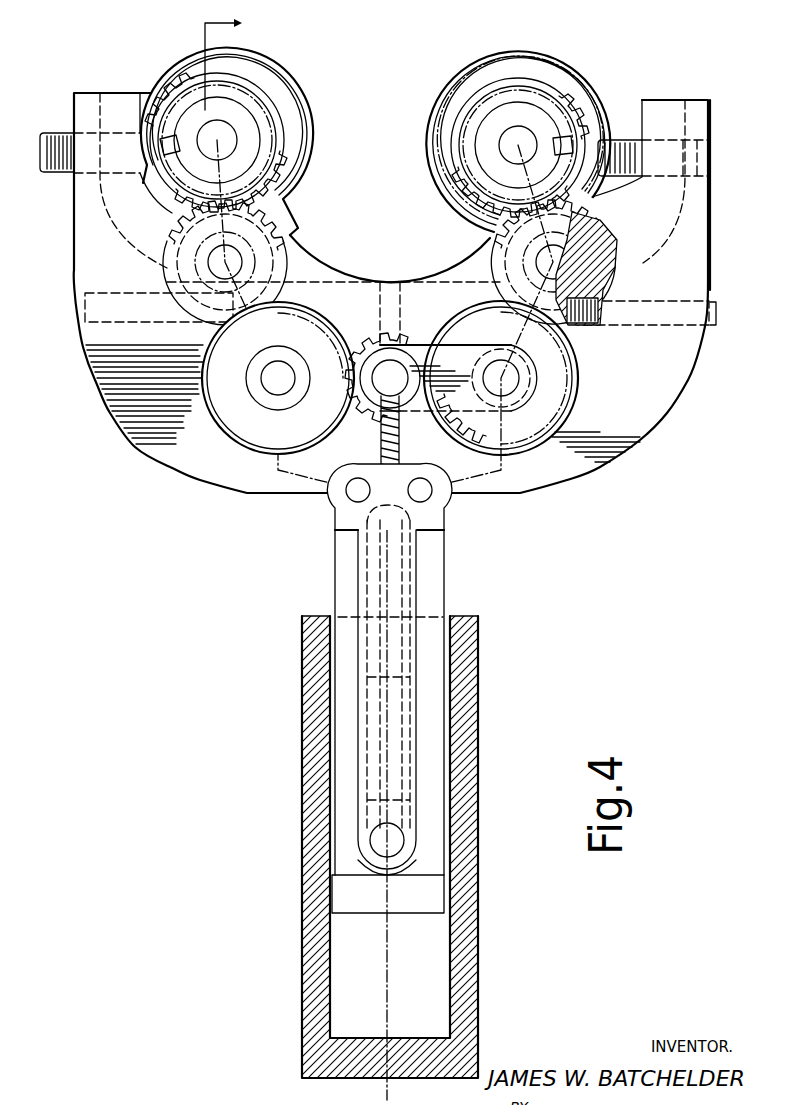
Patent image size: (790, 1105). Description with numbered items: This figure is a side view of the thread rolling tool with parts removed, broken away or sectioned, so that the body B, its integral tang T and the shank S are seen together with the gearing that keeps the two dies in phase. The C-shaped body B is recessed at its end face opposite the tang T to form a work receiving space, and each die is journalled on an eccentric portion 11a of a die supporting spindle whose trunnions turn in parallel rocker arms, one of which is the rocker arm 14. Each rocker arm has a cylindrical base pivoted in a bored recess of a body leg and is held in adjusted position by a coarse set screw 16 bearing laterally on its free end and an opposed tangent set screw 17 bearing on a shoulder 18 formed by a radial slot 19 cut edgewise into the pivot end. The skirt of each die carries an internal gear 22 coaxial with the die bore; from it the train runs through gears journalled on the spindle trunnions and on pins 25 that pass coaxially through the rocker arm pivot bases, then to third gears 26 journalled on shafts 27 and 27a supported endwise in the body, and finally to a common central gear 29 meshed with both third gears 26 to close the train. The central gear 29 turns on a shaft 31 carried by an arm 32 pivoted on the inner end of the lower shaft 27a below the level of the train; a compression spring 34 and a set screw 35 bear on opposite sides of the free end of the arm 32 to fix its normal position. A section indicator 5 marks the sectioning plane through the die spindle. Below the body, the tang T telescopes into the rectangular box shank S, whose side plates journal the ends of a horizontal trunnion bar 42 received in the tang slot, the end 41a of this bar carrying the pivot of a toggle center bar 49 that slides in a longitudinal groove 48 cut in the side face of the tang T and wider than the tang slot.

The body B is at (72, 258).
The shank S is at (298, 767).
The tang T is at (372, 716).
The section line 5- 5 is at (231, 55).
The eccentric portion 11a is at (262, 101).
The rocker arm 14 is at (349, 120).
The coarse set screw 16 is at (45, 158).
The tangent set screw 17 is at (83, 312).
The shoulder 18 is at (590, 304).
The radial slot 19 is at (577, 282).
The internal gear 22 is at (172, 93).
The pin or shaft 25 is at (293, 250).
The third gear 26 is at (262, 437).
The shaft 27 is at (265, 414).
The lower shaft 27a is at (497, 393).
The central gear 29 is at (364, 342).
The shaft 31 is at (369, 355).
The arm 32 is at (450, 352).
The compression spring 34 is at (448, 494).
The set screw 35 is at (396, 290).
The trunnion bar end 41a is at (403, 839).
The trunnion bar 42 is at (368, 873).
The longitudinal groove 48 is at (358, 863).
The toggle center bar 49 is at (372, 690).